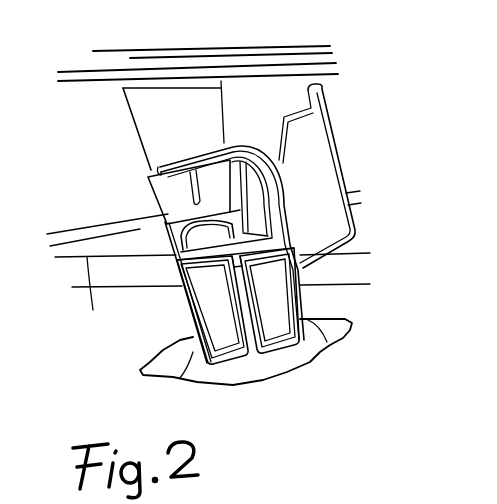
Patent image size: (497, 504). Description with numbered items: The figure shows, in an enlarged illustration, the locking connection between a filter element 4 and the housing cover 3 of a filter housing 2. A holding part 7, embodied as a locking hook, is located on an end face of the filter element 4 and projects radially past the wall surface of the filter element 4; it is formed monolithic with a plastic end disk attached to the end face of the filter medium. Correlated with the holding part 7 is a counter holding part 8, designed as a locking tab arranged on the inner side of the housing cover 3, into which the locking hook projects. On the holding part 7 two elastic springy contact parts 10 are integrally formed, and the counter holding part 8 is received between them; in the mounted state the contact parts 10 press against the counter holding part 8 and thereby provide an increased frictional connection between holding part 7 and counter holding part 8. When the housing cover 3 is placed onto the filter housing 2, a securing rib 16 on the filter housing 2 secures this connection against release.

The filter housing 2 is at (368, 248).
The housing cover 3 is at (150, 51).
The filter element 4 is at (338, 320).
The holding part 7 is at (237, 147).
The counter holding part 8 is at (143, 118).
The elastic springy contact parts 10 is at (173, 237).
The securing rib 16 is at (318, 167).